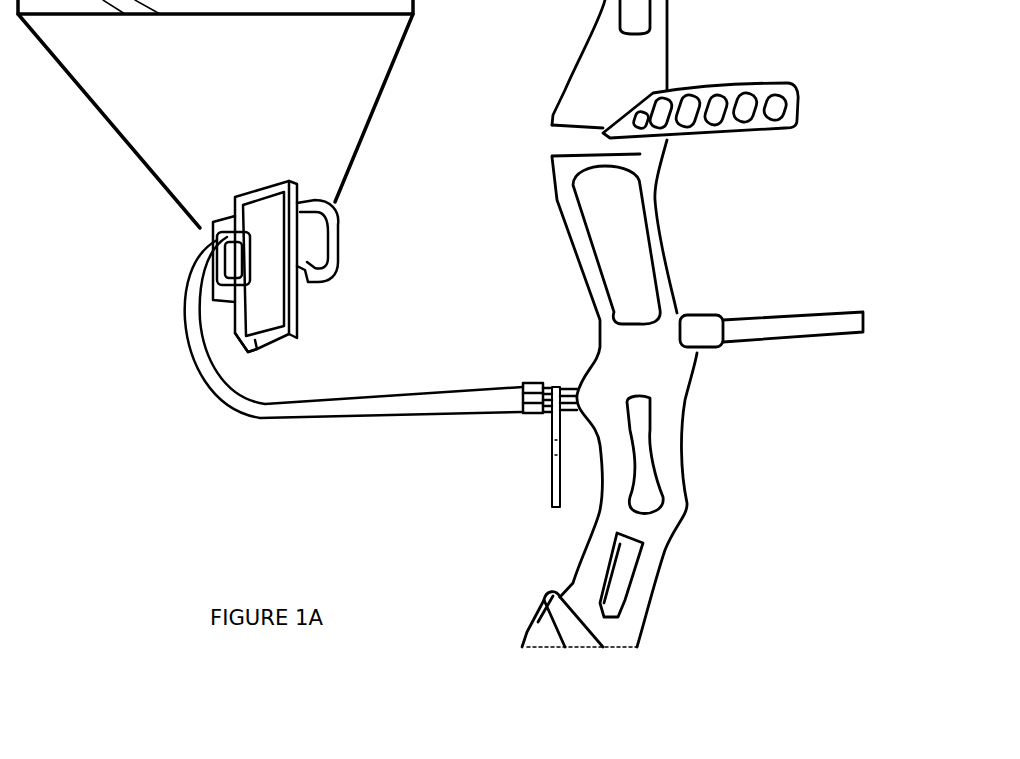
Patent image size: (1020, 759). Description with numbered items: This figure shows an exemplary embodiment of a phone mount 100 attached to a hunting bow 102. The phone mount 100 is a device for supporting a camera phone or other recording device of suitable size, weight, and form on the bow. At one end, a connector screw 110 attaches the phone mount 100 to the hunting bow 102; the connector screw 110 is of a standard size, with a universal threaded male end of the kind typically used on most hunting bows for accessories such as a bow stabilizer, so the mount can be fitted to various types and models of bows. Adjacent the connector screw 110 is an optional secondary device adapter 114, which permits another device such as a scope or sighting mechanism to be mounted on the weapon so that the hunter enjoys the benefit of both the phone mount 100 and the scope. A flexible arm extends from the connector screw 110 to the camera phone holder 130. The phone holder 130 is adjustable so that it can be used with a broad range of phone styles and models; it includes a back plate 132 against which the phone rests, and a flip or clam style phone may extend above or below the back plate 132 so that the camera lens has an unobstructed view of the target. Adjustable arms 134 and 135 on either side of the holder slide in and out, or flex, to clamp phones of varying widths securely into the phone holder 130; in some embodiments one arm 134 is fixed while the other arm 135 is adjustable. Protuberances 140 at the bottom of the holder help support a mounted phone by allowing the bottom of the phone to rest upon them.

The phone mount 100 is at (240, 440).
The hunting bow 102 is at (617, 523).
The connector screw 110 is at (550, 360).
The secondary device adapter 114 is at (557, 445).
The camera phone holder 130 is at (238, 227).
The back plate 132 is at (265, 290).
The adjustable arm 134 is at (338, 226).
The adjustable arm 135 is at (228, 242).
The protuberances 140 is at (255, 348).